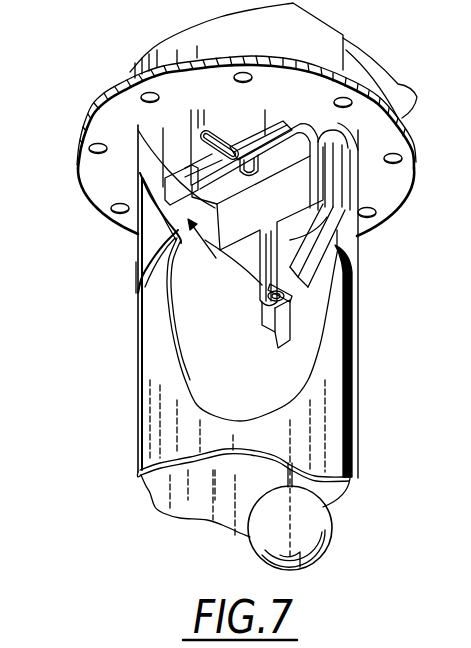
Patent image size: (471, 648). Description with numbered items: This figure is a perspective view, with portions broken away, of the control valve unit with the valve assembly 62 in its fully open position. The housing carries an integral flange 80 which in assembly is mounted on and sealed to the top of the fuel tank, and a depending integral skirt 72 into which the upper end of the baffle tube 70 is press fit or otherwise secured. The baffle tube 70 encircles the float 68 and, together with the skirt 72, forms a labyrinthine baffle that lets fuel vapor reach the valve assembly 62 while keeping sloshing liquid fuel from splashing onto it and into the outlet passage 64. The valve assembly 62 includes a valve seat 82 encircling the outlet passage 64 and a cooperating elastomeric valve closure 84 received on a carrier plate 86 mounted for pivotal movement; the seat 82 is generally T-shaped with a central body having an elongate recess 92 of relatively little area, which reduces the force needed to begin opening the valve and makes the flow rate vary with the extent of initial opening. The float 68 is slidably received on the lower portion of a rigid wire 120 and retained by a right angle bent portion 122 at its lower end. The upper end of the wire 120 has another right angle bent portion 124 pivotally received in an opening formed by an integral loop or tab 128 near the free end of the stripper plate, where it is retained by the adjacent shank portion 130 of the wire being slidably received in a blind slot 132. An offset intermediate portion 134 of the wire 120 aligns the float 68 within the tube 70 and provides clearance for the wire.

The valve assembly 62 is at (214, 274).
The outlet passage 64 is at (280, 150).
The float 68 is at (332, 523).
The baffle tube 70 is at (137, 350).
The housing skirt 72 is at (137, 245).
The flange 80 is at (78, 170).
The valve seat 82 is at (166, 158).
The elastomeric valve closure 84 is at (305, 183).
The carrier plate 86 is at (287, 263).
The recess 92 is at (214, 145).
The wire 120 is at (300, 475).
The right angle bent portion 122 is at (307, 567).
The right angle bent portion 124 is at (280, 298).
The loop or tab 128 is at (284, 314).
The shank portion 130 is at (267, 325).
The blind slot 132 is at (300, 60).
The offset intermediate portion 134 is at (278, 348).